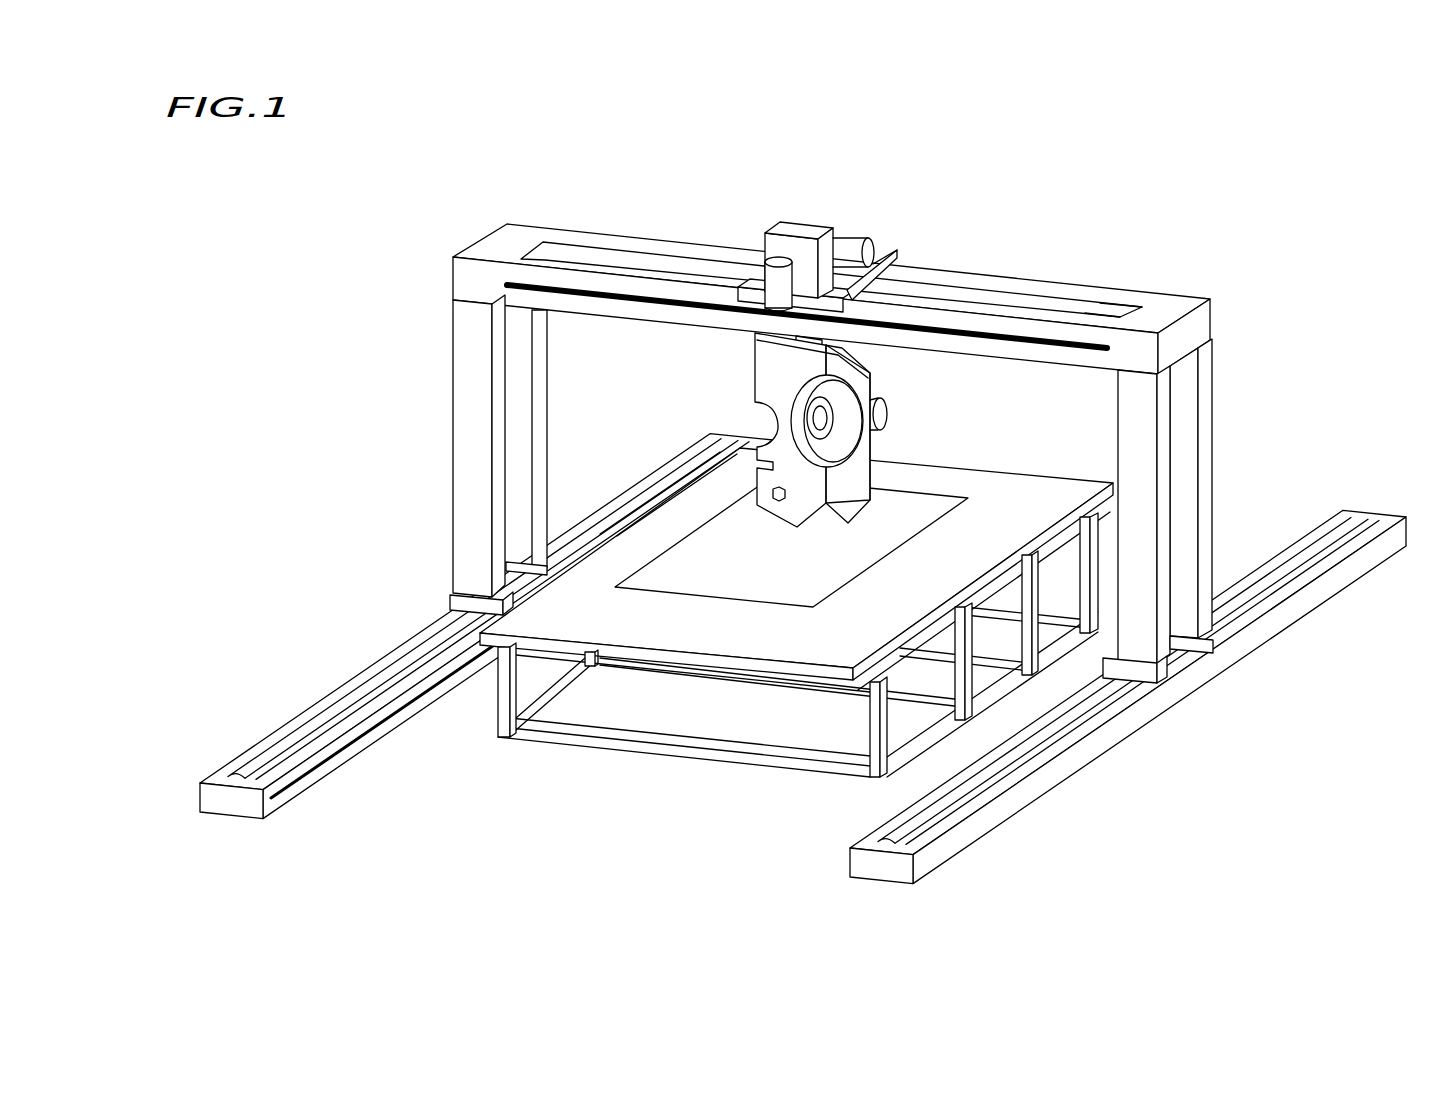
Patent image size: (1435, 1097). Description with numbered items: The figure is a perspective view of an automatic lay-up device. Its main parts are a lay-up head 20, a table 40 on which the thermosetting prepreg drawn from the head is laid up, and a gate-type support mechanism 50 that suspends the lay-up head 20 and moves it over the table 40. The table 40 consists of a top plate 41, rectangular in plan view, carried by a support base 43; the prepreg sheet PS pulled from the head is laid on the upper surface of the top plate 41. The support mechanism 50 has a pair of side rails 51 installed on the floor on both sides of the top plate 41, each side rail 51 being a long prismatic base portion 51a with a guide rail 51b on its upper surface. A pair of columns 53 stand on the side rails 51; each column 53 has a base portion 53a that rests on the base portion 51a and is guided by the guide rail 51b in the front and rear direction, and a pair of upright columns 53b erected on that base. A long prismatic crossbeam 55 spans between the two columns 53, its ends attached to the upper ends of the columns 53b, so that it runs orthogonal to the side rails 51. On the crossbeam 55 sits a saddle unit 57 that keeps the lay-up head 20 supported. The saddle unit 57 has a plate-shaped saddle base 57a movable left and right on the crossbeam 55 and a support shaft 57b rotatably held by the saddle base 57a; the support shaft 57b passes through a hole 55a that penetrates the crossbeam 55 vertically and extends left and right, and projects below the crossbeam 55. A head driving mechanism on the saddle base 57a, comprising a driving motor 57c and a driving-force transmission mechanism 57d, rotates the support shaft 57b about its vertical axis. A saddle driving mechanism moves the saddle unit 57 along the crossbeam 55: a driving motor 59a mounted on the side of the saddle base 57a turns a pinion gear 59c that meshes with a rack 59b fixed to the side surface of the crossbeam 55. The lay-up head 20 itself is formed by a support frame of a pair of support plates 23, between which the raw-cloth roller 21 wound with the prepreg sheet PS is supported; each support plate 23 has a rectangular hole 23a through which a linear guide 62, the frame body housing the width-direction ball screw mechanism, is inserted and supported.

The lay-up head 20 is at (886, 442).
The raw-cloth roller 21 is at (772, 430).
The support plate 23 is at (745, 462).
The rectangular hole 23a is at (755, 505).
The table 40 is at (796, 544).
The top plate 41 is at (1015, 480).
The support base 43 is at (720, 755).
The support mechanism 50 is at (1241, 252).
The side rail 51 is at (768, 679).
The base portion 51a is at (222, 778).
The guide rail 51b is at (1170, 792).
The column 53 is at (830, 499).
The base portion 53a is at (450, 604).
The column 53b is at (500, 422).
The crossbeam 55 is at (446, 272).
The hole 55a is at (585, 252).
The saddle unit 57 is at (758, 230).
The saddle base 57a is at (882, 265).
The support shaft 57b is at (835, 340).
The driving motor 57c is at (870, 243).
The driving-force transmission mechanism 57d is at (803, 218).
The driving motor 59a is at (737, 282).
The rack 59b is at (1058, 308).
The pinion gear 59c is at (765, 326).
The linear guide 62 is at (752, 490).
The prepreg sheet PS is at (867, 470).